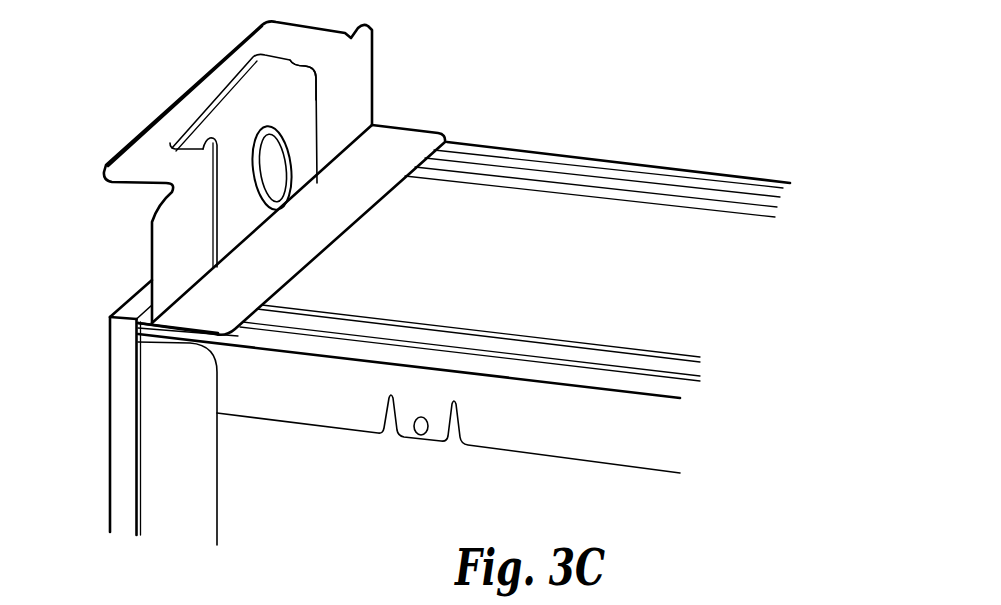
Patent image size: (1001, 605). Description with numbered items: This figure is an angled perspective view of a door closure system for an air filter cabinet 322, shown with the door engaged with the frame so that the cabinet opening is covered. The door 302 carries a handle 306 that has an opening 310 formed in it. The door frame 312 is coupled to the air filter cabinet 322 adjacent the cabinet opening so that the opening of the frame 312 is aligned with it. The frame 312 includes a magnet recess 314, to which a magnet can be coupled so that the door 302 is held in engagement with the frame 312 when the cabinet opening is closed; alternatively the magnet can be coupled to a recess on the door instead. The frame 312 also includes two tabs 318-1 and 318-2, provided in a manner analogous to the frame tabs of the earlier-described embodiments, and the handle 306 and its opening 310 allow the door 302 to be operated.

The door 302 is at (120, 400).
The handle 306 is at (137, 161).
The opening 310 is at (237, 108).
The door frame 312 is at (350, 187).
The magnet recess 314 is at (275, 172).
The tab 318-1 is at (213, 145).
The tab 318-2 is at (293, 72).
The air filter cabinet 322 is at (605, 240).